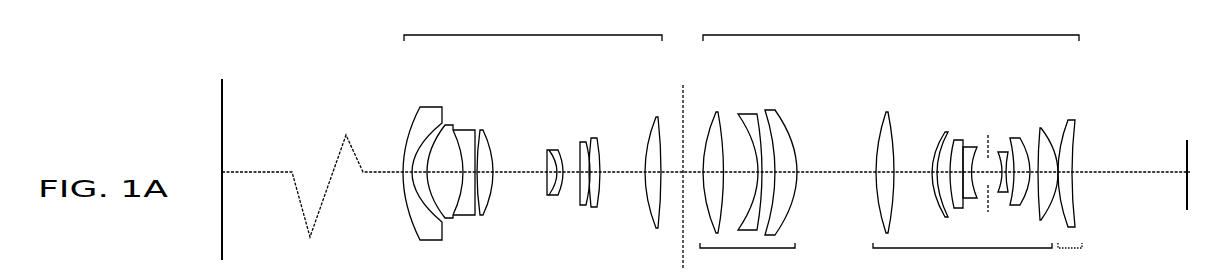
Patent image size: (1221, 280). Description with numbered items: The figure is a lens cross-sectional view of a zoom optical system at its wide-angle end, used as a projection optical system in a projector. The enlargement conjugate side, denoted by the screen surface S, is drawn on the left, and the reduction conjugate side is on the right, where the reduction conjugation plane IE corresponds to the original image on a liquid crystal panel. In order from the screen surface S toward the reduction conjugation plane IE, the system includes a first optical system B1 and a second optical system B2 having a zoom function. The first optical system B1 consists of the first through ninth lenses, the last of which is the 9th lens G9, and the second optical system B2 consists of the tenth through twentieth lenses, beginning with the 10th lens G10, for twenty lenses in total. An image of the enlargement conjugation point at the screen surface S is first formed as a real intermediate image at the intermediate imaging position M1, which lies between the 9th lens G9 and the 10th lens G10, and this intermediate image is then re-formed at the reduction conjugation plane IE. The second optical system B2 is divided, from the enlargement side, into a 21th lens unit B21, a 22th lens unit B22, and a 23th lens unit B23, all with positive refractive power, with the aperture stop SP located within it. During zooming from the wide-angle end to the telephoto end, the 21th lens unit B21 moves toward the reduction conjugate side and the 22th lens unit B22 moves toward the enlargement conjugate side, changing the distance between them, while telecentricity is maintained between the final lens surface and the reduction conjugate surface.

The screen surface S is at (221, 100).
The first optical system B1 is at (532, 123).
The second optical system B2 is at (891, 24).
The 21th lens unit B21 is at (748, 194).
The 22th lens unit B22 is at (962, 195).
The 23th lens unit B23 is at (1064, 199).
The 9th lens G9 is at (650, 130).
The 10th lens G10 is at (718, 108).
The intermediate imaging position M1 is at (681, 100).
The aperture stop SP is at (985, 134).
The reduction conjugation plane IE is at (1185, 147).